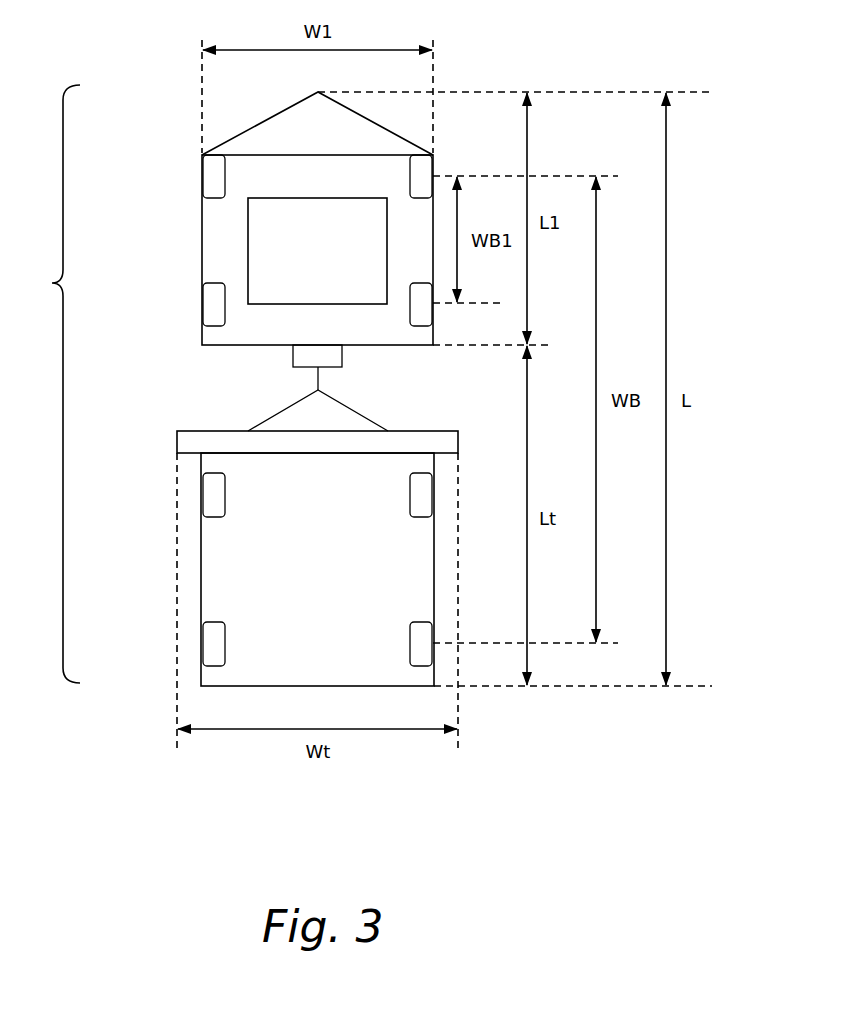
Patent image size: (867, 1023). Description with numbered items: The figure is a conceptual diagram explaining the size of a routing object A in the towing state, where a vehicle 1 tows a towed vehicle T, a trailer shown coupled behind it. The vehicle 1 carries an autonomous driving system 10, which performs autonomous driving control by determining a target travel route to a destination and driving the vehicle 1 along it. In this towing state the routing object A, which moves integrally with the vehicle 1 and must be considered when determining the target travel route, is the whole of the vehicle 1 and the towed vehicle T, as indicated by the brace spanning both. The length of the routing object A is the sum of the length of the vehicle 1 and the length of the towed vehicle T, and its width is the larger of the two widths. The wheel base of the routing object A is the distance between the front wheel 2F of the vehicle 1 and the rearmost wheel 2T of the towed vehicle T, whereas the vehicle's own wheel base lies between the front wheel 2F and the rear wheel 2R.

The vehicle 1 is at (202, 240).
The front wheel 2F is at (210, 177).
The rear wheel 2R is at (210, 304).
The autonomous driving system 10 is at (290, 196).
The towed vehicle T is at (210, 560).
The rearmost wheel 2T is at (210, 643).
The routing object A is at (52, 284).